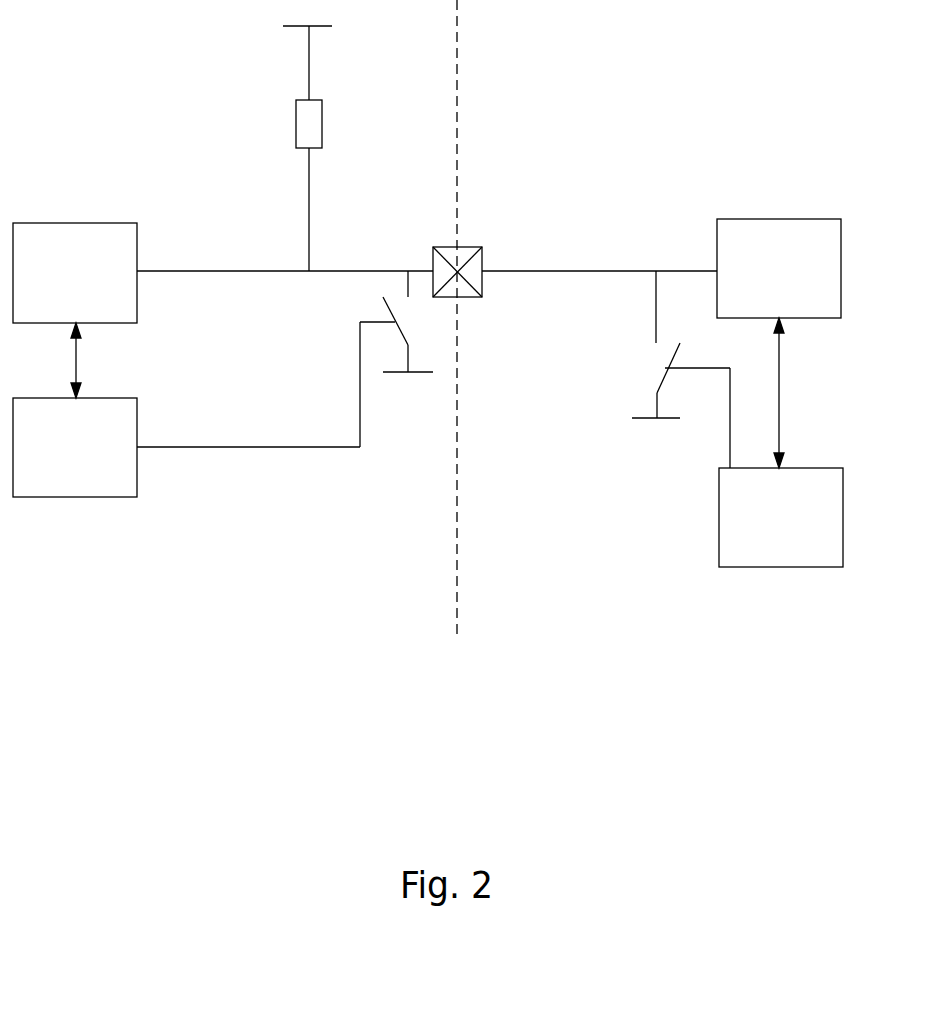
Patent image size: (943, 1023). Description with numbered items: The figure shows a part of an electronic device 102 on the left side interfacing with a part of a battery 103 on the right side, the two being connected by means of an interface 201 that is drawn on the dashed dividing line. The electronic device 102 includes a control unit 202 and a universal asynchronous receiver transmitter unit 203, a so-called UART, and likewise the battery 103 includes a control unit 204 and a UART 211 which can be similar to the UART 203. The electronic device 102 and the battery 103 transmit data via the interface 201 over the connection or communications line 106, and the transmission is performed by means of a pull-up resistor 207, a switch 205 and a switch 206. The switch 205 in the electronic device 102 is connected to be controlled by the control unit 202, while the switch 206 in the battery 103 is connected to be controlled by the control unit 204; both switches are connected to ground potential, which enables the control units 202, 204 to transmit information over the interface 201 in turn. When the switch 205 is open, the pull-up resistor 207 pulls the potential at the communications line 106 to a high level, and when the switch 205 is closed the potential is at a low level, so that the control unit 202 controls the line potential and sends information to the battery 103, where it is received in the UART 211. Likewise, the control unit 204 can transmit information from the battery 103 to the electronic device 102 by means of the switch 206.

The electronic device 102 is at (273, 628).
The battery 103 is at (643, 628).
The connection 106 is at (349, 271).
The interface 201 is at (472, 245).
The control unit 202 is at (103, 497).
The universal asynchronous receiver transmitter unit 203 is at (52, 223).
The control unit 204 is at (806, 468).
The switch 205 is at (410, 322).
The switch 206 is at (655, 368).
The pull-up resistor 207 is at (322, 125).
The UART 211 is at (778, 219).